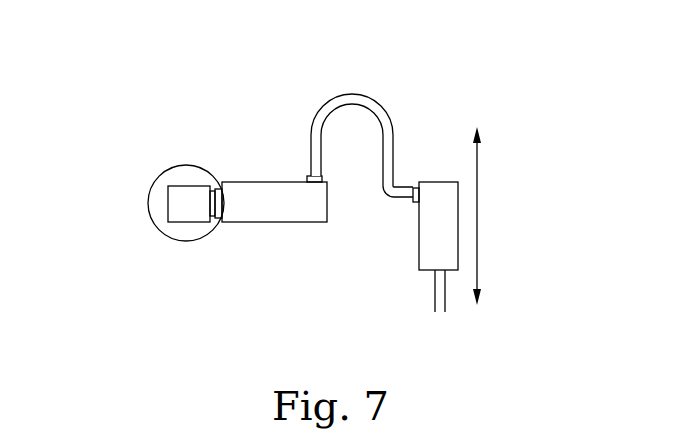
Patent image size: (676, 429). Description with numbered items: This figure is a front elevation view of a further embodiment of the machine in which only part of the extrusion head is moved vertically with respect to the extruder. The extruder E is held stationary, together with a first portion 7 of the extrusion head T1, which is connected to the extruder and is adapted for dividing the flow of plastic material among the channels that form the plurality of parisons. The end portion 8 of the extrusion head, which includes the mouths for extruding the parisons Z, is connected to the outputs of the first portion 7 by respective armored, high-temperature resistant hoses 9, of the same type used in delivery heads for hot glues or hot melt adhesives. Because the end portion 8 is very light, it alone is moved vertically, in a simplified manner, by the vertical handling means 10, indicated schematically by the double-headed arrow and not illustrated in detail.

The extruder E is at (150, 180).
The extrusion head T1 is at (236, 181).
The first portion of the extrusion head 7 is at (275, 190).
The armored, high-temperature resistant hoses 9 is at (340, 91).
The end portion of the extrusion head 8 is at (440, 190).
The parisons Z is at (436, 291).
The vertical handling means 10 is at (477, 207).